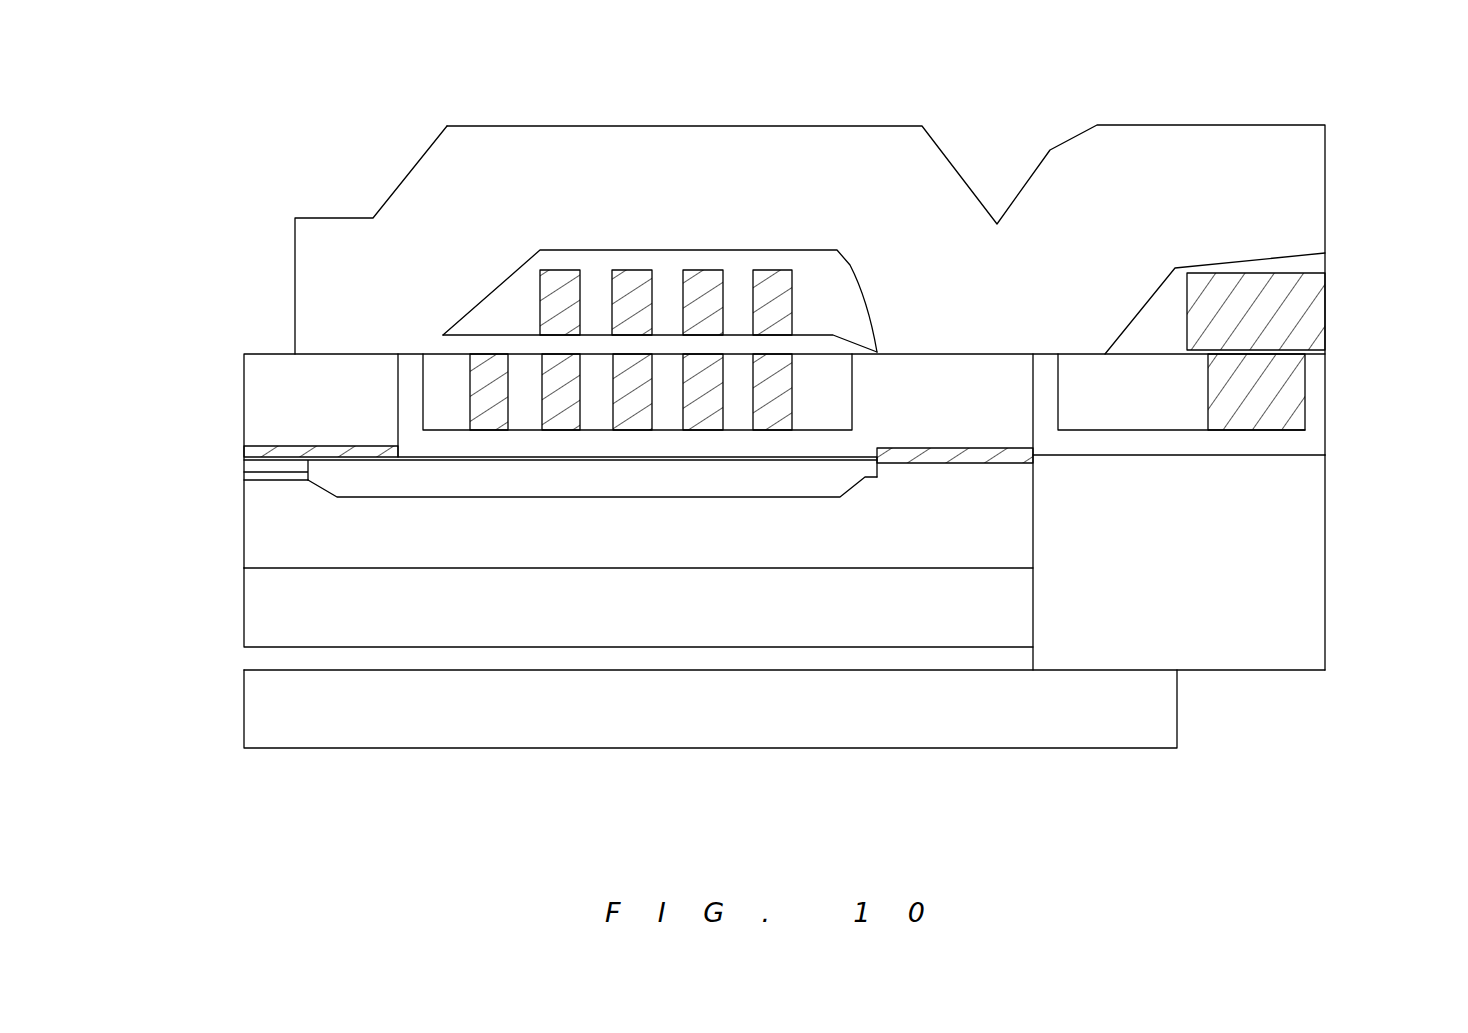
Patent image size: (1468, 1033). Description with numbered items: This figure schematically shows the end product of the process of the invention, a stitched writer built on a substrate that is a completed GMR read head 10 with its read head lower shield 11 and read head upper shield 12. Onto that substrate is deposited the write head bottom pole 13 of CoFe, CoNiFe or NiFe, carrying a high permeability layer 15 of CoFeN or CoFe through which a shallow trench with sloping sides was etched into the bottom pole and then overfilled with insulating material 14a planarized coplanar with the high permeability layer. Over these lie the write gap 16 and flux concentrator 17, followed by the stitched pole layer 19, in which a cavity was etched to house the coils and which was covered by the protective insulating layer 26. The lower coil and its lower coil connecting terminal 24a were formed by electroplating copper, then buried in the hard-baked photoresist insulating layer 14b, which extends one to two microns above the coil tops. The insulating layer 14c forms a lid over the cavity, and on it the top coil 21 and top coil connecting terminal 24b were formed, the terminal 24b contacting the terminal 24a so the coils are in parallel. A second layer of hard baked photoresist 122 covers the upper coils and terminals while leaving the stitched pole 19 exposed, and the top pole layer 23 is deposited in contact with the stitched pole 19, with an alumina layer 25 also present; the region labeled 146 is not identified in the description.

The GMR read head 10 is at (270, 660).
The read head lower shield 11 is at (270, 718).
The read head upper shield 12 is at (270, 610).
The write head bottom pole 13 is at (262, 550).
The insulating material 14a is at (365, 478).
The insulating layer of photoresist 14b is at (1078, 397).
The insulating layer 14c is at (455, 340).
The high permeability layer 15 is at (263, 477).
The write gap 16 is at (265, 465).
The flux concentrator 17 is at (297, 447).
The stitched pole layer 19 is at (270, 381).
The top coil 21 is at (782, 283).
The top pole layer 23 is at (1278, 197).
The lower coil connecting terminal 24a is at (1272, 388).
The top coil connecting terminal 24b is at (1272, 302).
The alumina layer 25 is at (1275, 565).
The protective insulating layer 26 is at (1298, 438).
The second layer of hard baked photoresist 122 is at (520, 288).
The ridge structure 146 is at (593, 373).